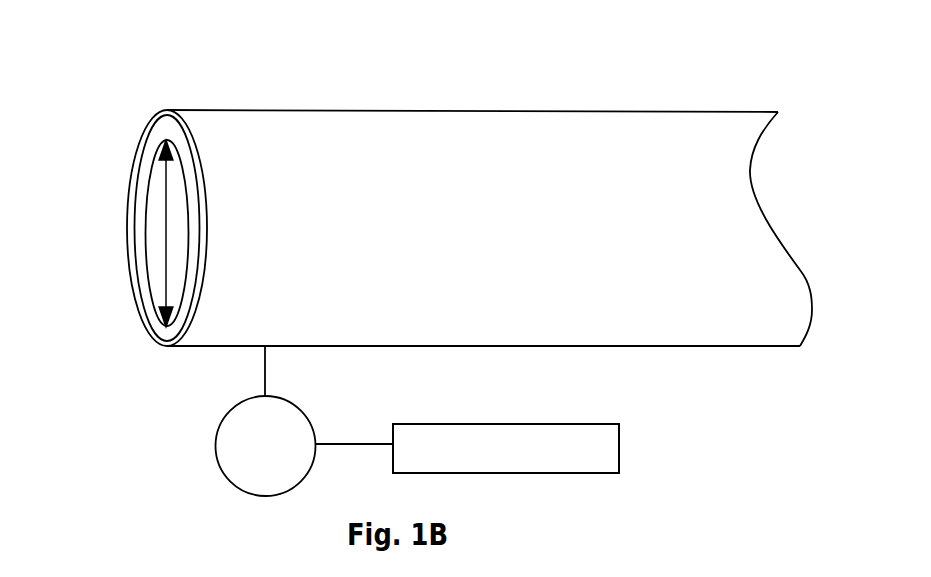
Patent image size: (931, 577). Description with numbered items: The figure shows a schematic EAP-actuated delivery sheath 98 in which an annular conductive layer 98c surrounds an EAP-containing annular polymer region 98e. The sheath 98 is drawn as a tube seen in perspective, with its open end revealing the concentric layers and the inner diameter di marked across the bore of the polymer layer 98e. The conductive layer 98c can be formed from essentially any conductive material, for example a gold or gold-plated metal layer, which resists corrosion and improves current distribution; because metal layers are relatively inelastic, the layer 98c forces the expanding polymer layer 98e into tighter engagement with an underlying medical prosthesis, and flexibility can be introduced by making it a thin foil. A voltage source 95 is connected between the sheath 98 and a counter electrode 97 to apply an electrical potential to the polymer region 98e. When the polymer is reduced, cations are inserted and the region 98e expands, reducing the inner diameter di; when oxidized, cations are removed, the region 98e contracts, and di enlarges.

The EAP-actuated delivery sheath 98 is at (325, 93).
The annular conductive layer 98c is at (168, 115).
The EAP-containing annular polymer region 98e is at (165, 335).
The inner diameter di is at (165, 203).
The voltage source 95 is at (216, 443).
The counter electrode 97 is at (619, 448).